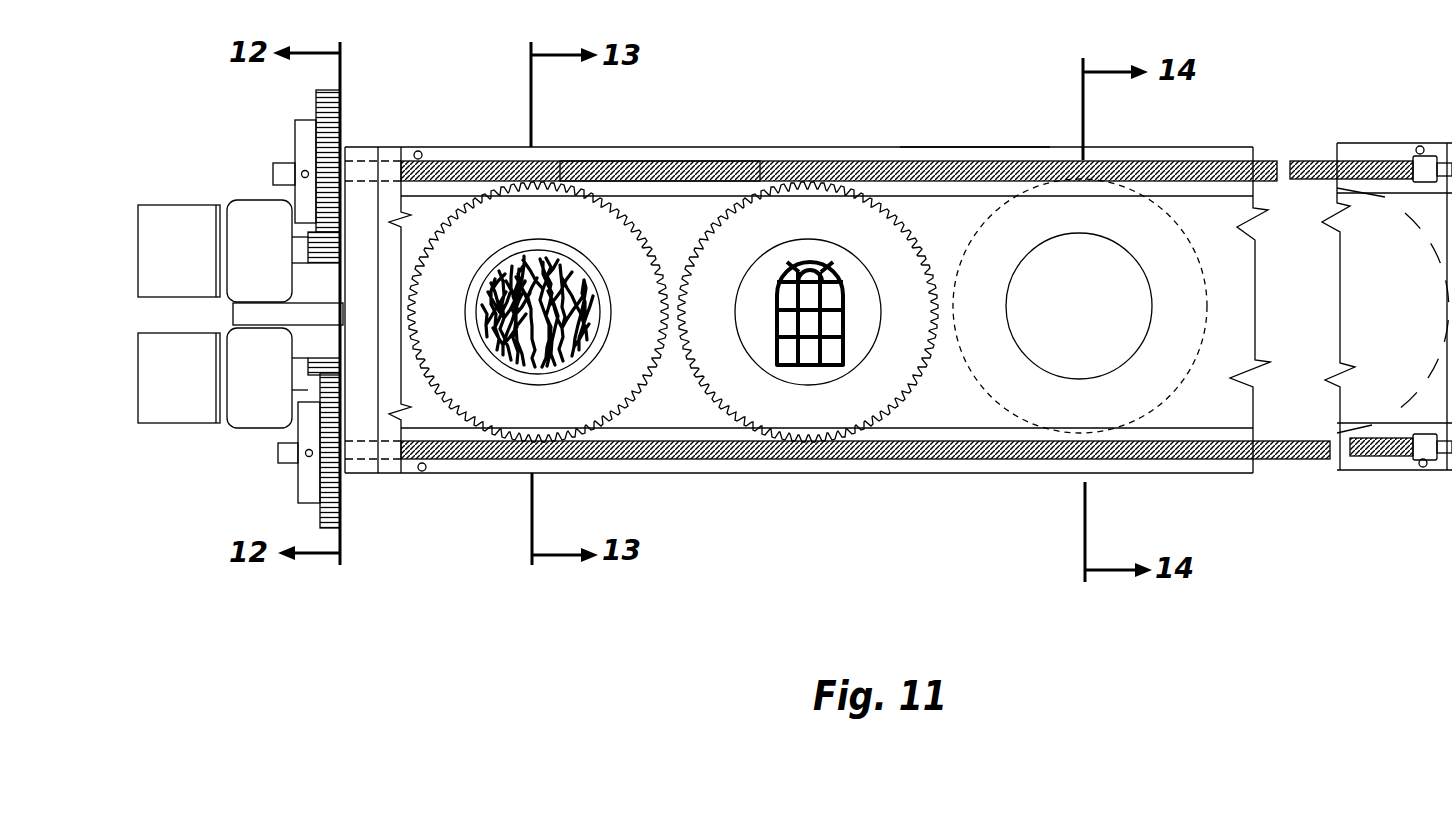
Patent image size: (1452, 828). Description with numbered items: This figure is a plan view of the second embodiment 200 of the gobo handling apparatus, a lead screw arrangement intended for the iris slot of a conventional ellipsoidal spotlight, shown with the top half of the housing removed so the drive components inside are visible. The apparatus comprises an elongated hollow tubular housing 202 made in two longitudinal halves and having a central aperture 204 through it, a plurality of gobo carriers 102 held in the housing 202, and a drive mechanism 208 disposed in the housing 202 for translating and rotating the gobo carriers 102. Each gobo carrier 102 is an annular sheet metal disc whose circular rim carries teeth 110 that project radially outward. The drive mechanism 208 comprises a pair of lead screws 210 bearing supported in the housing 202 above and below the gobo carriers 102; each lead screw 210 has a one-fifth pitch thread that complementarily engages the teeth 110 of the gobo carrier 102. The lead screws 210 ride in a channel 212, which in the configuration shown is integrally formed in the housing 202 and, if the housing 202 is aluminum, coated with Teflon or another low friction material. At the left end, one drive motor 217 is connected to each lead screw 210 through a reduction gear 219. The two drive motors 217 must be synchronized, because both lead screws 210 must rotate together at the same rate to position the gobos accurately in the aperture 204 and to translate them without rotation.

The second embodiment of the gobo handling apparatus 200 is at (630, 655).
The housing 202 is at (777, 146).
The central aperture 204 is at (1018, 337).
The drive mechanism 208 is at (641, 150).
The lead screws 210 is at (907, 165).
The channel 212 is at (972, 148).
The teeth 110 is at (447, 397).
The gobo carrier 102 is at (645, 397).
The drive motor 217 is at (188, 218).
The reduction gear 219 is at (333, 105).